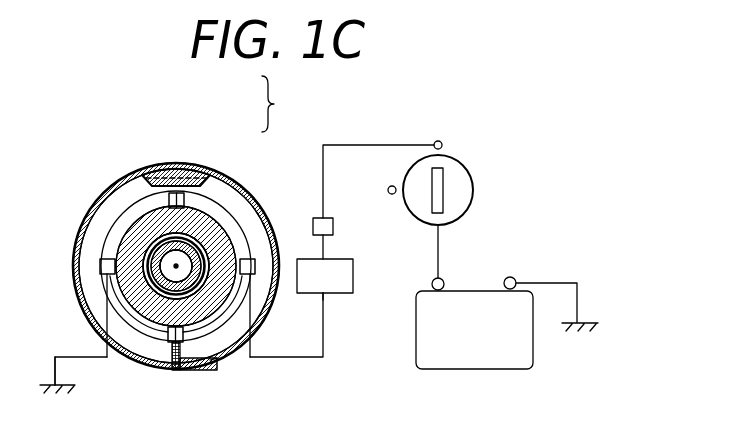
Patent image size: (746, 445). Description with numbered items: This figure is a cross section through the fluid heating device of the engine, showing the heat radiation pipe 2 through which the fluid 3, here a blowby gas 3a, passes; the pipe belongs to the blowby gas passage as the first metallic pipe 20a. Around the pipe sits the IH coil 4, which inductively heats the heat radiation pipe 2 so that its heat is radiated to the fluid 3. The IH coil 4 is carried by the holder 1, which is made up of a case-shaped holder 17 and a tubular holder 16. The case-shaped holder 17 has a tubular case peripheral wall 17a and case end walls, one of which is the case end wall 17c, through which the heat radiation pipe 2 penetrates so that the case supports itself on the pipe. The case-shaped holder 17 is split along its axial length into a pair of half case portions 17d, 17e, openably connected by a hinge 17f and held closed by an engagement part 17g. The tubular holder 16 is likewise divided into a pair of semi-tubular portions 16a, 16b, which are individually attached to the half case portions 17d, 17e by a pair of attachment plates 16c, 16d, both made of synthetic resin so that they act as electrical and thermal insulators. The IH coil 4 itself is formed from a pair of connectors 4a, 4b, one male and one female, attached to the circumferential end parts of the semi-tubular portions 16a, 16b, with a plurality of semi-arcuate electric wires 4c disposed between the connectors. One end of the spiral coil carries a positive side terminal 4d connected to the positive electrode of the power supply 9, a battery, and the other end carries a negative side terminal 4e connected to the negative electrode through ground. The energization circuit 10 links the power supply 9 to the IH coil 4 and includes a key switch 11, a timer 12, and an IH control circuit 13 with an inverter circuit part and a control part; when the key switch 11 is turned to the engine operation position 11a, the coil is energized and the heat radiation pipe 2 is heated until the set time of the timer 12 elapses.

The holder 1 is at (278, 104).
The heat radiation pipe 2 is at (176, 266).
The fluid 3 is at (176, 266).
The blowby gas 3a is at (174, 270).
The IH coil 4 is at (235, 221).
The connector 4a is at (170, 194).
The connector 4b is at (193, 164).
The semi-arcuate electric wire 4c is at (100, 265).
The positive side terminal 4d is at (254, 273).
The negative side terminal 4e is at (102, 273).
The power supply 9 is at (462, 362).
The energization circuit 10 is at (334, 300).
The key switch 11 is at (476, 198).
The engine operation position 11a is at (445, 146).
The timer 12 is at (334, 226).
The IH control circuit 13 is at (345, 276).
The tubular holder 16 is at (193, 232).
The semi-tubular portion 16a is at (152, 320).
The semi-tubular portion 16b is at (228, 368).
The attachment plate 16c is at (177, 371).
The attachment plate 16d is at (187, 371).
The case-shaped holder 17 is at (182, 213).
The case peripheral wall 17a is at (258, 318).
The case end wall 17c is at (90, 298).
The half case portion 17d is at (92, 332).
The half case portion 17e is at (255, 333).
The hinge 17f is at (168, 168).
The engagement part 17g is at (195, 372).
The first metallic pipe 20a is at (205, 200).